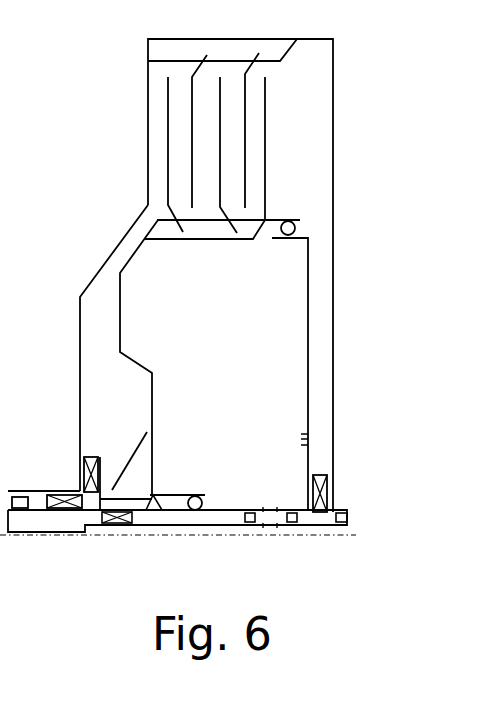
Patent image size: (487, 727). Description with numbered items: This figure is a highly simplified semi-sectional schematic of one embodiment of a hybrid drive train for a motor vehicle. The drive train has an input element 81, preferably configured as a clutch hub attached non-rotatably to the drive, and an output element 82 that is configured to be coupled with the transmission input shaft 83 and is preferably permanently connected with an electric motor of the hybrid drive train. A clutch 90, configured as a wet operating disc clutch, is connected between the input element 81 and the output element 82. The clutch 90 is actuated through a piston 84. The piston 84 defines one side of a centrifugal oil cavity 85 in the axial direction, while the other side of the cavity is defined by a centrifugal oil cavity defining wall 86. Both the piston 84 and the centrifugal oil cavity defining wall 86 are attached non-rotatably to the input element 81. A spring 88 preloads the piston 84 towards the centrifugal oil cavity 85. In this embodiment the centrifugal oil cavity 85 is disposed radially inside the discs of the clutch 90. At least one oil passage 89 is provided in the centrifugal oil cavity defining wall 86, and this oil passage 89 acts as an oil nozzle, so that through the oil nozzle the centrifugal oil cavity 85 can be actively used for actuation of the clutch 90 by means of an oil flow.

The clutch 90 is at (128, 132).
The output element 82 is at (333, 63).
The piston 84 is at (267, 165).
The centrifugal oil cavity 85 is at (238, 330).
The centrifugal oil cavity defining wall 86 is at (308, 233).
The spring 88 is at (137, 448).
The input element 81 is at (158, 495).
The oil passage 89 is at (308, 442).
The transmission input shaft 83 is at (310, 515).